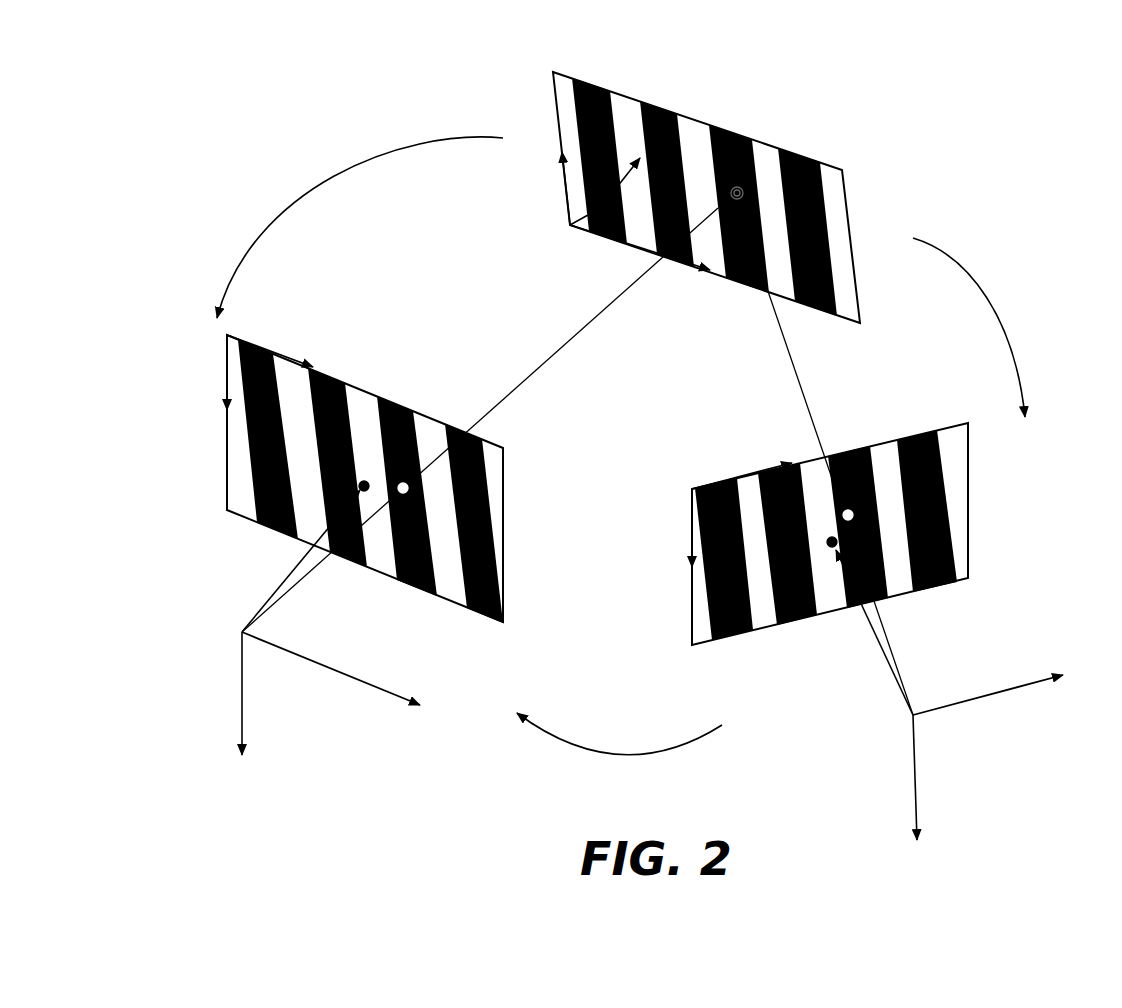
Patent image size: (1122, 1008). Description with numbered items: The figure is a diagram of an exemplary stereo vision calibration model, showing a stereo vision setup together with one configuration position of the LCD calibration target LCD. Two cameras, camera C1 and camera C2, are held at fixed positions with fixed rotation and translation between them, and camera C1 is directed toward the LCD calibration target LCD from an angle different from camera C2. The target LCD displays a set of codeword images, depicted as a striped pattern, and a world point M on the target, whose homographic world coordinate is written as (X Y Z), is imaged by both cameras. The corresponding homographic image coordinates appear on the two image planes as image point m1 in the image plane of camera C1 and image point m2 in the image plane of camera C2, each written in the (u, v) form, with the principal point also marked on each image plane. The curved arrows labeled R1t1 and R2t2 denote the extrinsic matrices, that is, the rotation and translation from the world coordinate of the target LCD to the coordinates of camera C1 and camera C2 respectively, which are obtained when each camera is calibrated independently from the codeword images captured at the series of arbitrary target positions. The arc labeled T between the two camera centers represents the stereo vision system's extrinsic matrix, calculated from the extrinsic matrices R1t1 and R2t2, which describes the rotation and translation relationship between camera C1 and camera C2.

The LCD calibration target LCD is at (706, 181).
The world point M is at (792, 169).
The camera C1 is at (361, 545).
The camera C2 is at (877, 631).
The image point m1 is at (471, 497).
The image point m2 is at (927, 502).
The extrinsic matrix (R1 t1) R1t1 is at (360, 227).
The extrinsic matrix (R2 t2) R2t2 is at (1009, 327).
The stereo vision system extrinsic matrix T=(Rs, ts) T is at (619, 744).